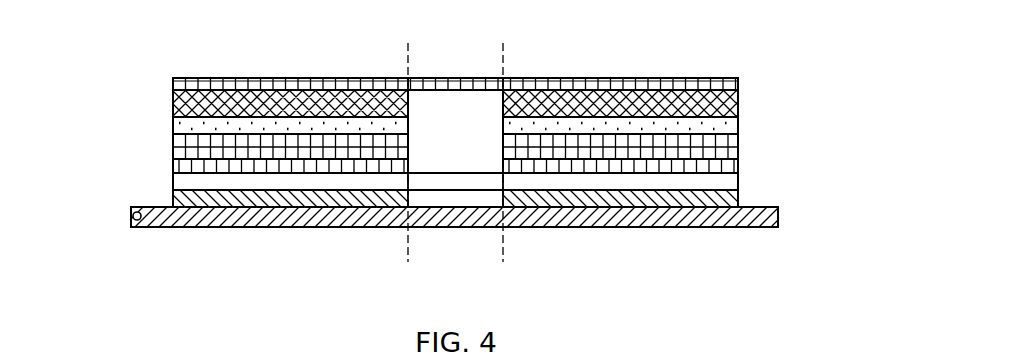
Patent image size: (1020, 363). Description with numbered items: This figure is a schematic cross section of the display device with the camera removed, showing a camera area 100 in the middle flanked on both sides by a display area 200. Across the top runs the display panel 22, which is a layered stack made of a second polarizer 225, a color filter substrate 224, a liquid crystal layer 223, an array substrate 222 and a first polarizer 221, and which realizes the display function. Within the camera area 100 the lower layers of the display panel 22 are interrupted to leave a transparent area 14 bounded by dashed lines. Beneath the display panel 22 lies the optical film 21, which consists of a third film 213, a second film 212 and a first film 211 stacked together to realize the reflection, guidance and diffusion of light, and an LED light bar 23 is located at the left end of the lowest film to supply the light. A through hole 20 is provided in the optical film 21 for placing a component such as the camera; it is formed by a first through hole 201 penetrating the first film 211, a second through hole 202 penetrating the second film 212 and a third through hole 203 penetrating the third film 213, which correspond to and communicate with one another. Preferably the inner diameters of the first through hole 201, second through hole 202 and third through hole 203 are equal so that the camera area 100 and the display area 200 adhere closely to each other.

The camera area 100 is at (458, 62).
The display area 200 is at (214, 62).
The transparent area 14 is at (443, 107).
The display panel 22 is at (810, 72).
The second polarizer 225 is at (715, 86).
The color filter substrate 224 is at (716, 112).
The liquid crystal layer 223 is at (721, 128).
The array substrate 222 is at (716, 155).
The first polarizer 221 is at (716, 167).
The optical film 21 is at (810, 180).
The third film 213 is at (708, 184).
The second film 212 is at (680, 196).
The first film 211 is at (607, 214).
The LED light bar 23 is at (134, 211).
The through hole 20 is at (322, 240).
The first through hole 201 is at (422, 214).
The second through hole 202 is at (457, 195).
The third through hole 203 is at (492, 180).